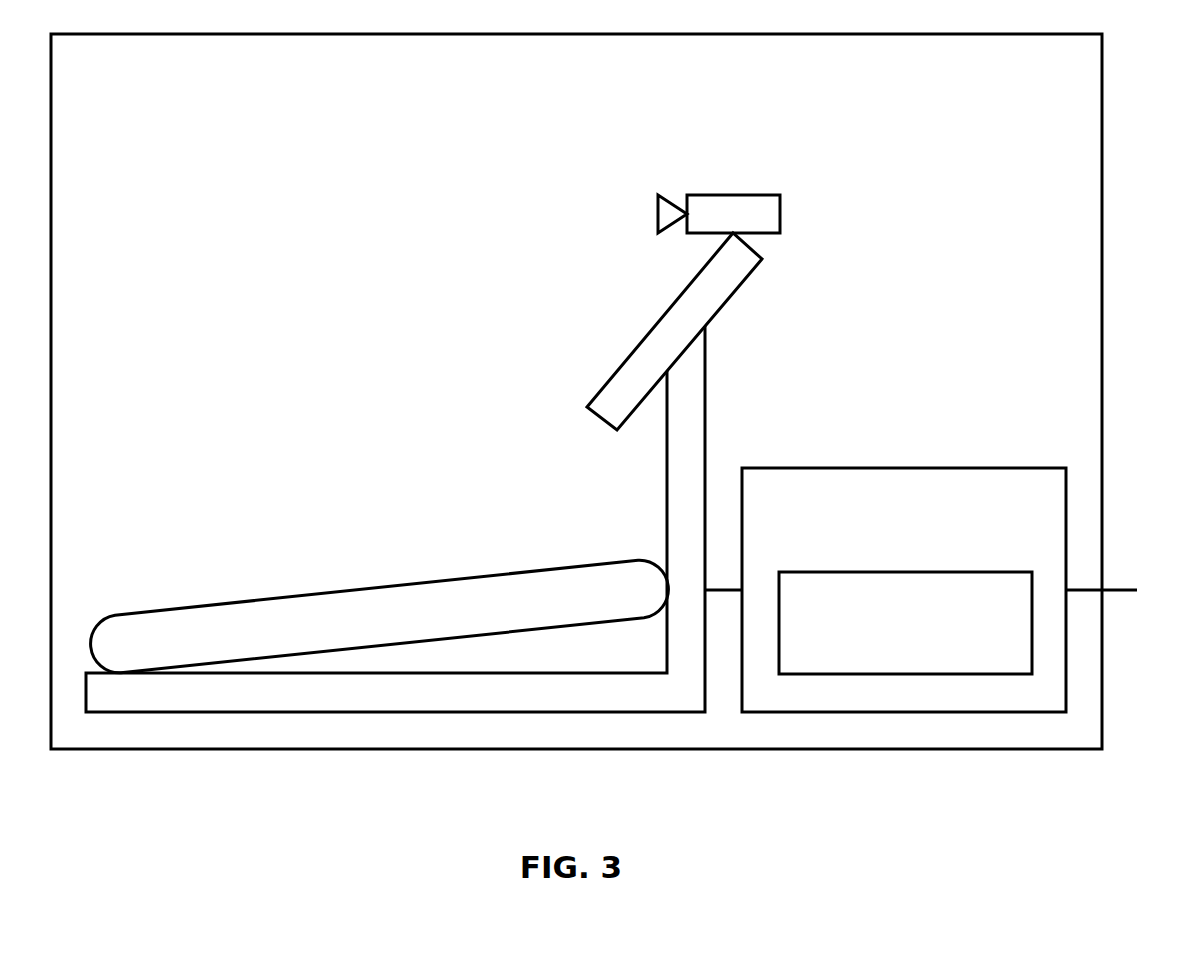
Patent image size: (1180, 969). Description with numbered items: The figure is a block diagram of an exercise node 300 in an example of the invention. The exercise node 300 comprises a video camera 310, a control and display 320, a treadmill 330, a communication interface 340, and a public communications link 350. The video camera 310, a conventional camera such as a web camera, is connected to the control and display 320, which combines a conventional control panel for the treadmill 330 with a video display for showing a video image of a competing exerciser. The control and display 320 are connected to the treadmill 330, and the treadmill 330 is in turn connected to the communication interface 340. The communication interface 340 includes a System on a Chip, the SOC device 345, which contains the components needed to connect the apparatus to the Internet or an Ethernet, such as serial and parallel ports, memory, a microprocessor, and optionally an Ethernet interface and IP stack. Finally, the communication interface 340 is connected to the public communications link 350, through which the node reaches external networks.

The exercise node 300 is at (553, 137).
The video camera 310 is at (781, 213).
The control and display 320 is at (762, 260).
The treadmill 330 is at (525, 568).
The communication interface 340 is at (883, 566).
The SOC device 345 is at (884, 666).
The public communications link 350 is at (1117, 589).